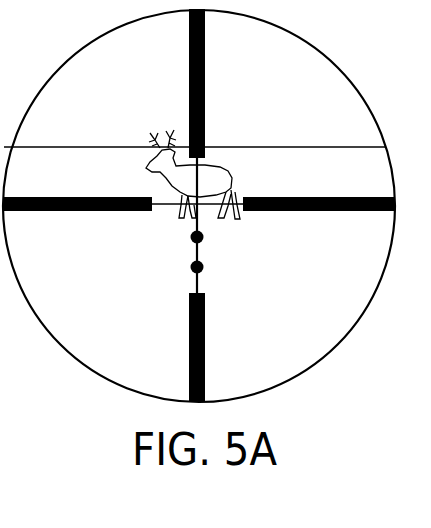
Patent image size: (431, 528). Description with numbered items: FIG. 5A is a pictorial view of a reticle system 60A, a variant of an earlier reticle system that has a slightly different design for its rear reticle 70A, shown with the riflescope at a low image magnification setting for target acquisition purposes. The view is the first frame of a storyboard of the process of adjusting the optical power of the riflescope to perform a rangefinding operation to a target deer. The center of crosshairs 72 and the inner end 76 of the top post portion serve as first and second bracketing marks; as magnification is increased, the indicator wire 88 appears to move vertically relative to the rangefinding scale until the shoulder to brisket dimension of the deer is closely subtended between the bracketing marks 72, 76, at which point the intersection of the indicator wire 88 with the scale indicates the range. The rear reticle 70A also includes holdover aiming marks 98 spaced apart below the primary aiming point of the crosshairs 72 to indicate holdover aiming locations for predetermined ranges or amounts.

The reticle system 60A is at (279, 71).
The rear reticle 70A is at (345, 184).
The center of crosshairs 72 is at (229, 198).
The inner end of top post portion 76 is at (199, 158).
The indicator wire 88 is at (263, 147).
The holdover aiming marks 98 is at (191, 239).